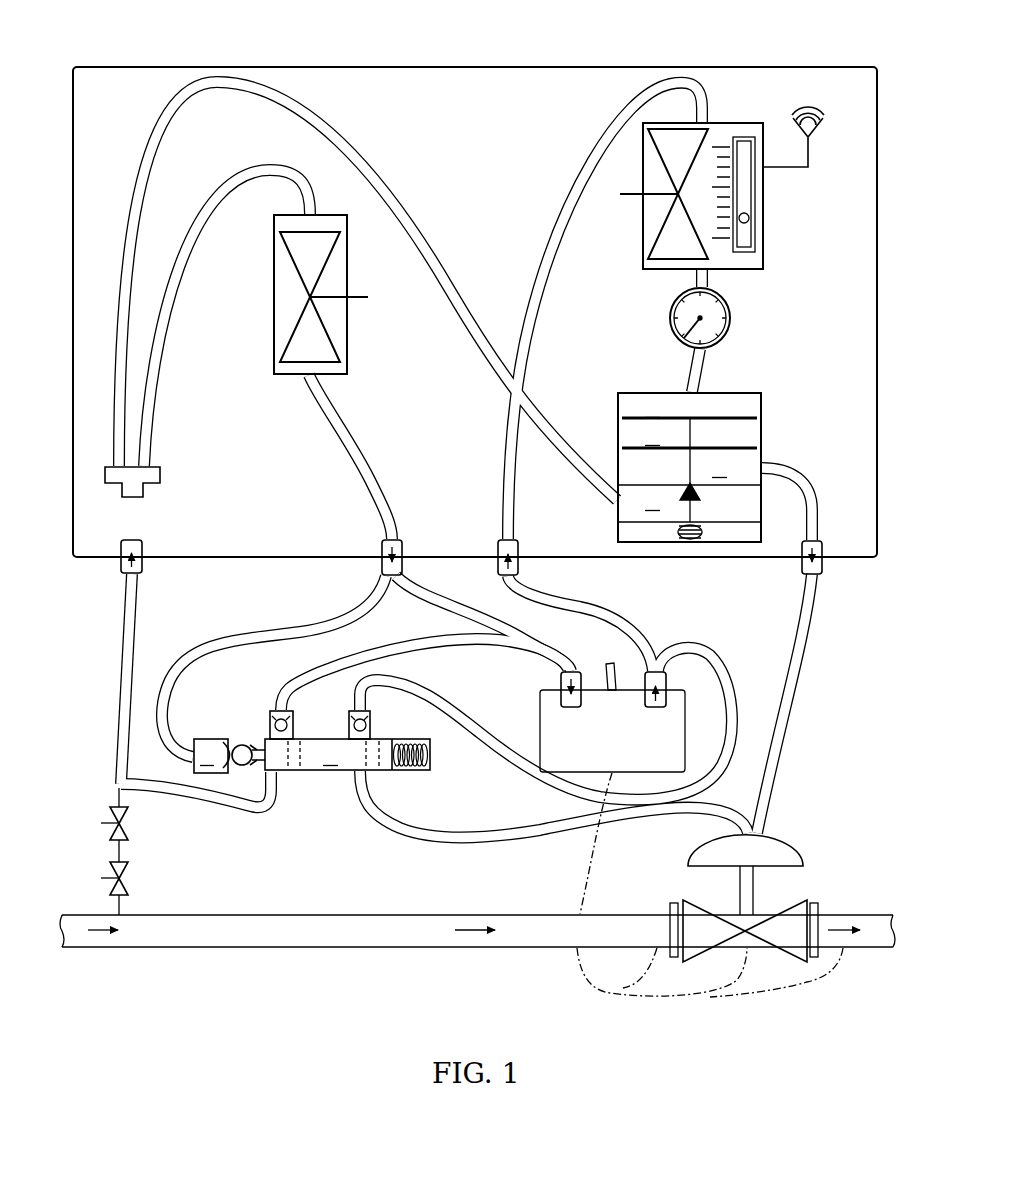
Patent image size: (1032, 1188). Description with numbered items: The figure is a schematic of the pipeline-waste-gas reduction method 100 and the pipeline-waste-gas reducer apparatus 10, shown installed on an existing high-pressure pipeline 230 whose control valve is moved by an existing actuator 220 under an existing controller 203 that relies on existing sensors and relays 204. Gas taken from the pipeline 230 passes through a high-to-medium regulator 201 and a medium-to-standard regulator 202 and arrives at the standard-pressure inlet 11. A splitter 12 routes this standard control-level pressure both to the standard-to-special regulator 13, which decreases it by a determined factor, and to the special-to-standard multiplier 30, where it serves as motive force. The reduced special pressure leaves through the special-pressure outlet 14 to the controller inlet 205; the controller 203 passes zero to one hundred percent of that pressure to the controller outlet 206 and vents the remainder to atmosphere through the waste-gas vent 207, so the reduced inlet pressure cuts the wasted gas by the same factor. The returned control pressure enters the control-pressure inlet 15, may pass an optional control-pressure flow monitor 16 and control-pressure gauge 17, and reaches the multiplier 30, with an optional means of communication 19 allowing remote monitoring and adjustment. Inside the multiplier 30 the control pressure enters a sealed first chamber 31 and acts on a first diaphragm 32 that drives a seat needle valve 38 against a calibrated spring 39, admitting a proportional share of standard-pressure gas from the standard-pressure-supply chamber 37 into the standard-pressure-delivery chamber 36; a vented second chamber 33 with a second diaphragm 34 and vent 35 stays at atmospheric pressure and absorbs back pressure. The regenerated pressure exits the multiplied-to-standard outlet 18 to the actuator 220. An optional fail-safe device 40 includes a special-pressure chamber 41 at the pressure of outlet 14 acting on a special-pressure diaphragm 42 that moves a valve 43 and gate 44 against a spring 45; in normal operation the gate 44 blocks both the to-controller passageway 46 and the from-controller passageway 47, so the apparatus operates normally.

The pipeline-waste-gas reduction method 100 is at (108, 21).
The pipeline-waste-gas reducer apparatus 10 is at (117, 604).
The standard-pressure inlet 11 is at (145, 552).
The splitter 12 is at (152, 475).
The standard-to-special regulator 13 is at (342, 253).
The special-pressure outlet 14 is at (404, 551).
The control-pressure inlet 15 is at (520, 551).
The control-pressure flow monitor 16 is at (718, 126).
The control-pressure gauge 17 is at (731, 311).
The multiplied-to-standard outlet 18 is at (822, 550).
The means of communication 19 is at (814, 133).
The special-to-standard multiplier 30 is at (680, 455).
The sealed first chamber 31 is at (653, 408).
The first diaphragm 32 is at (707, 417).
The vented second chamber 33 is at (653, 436).
The second diaphragm 34 is at (707, 447).
The vent 35 is at (762, 433).
The standard-pressure-delivery chamber 36 is at (720, 468).
The standard-pressure-supply chamber 37 is at (653, 501).
The seat needle valve 38 is at (700, 495).
The spring 39 is at (703, 532).
The fail-safe device 40 is at (324, 731).
The special-pressure chamber 41 is at (211, 756).
The special-pressure diaphragm 42 is at (232, 741).
The valve 43 is at (258, 771).
The gate 44 is at (347, 754).
The spring 45 is at (427, 761).
The to-controller passageway 46 is at (290, 721).
The from-controller passageway 47 is at (368, 732).
The high-to-medium regulator 201 is at (126, 885).
The medium-to-standard regulator 202 is at (126, 830).
The controller 203 is at (543, 738).
The sensors and relays 204 is at (590, 877).
The controller inlet 205 is at (559, 685).
The controller outlet 206 is at (648, 700).
The waste-gas vent 207 is at (606, 662).
The actuator 220 is at (780, 848).
The high-pressure pipeline 230 is at (232, 917).